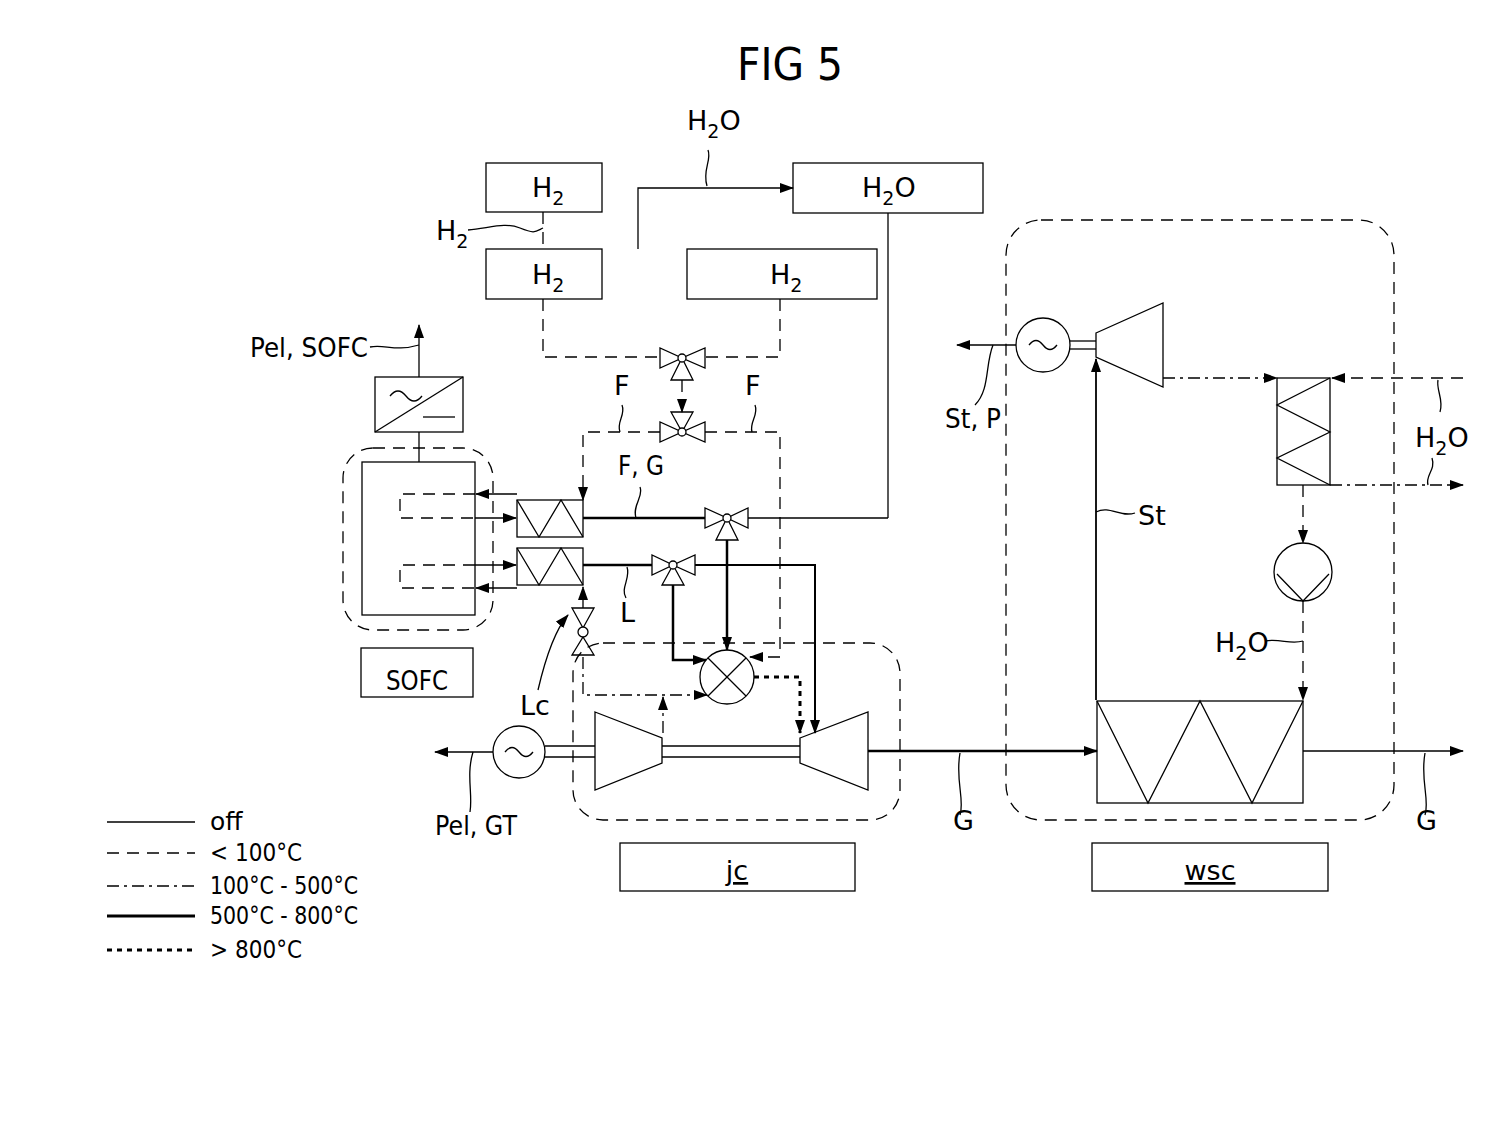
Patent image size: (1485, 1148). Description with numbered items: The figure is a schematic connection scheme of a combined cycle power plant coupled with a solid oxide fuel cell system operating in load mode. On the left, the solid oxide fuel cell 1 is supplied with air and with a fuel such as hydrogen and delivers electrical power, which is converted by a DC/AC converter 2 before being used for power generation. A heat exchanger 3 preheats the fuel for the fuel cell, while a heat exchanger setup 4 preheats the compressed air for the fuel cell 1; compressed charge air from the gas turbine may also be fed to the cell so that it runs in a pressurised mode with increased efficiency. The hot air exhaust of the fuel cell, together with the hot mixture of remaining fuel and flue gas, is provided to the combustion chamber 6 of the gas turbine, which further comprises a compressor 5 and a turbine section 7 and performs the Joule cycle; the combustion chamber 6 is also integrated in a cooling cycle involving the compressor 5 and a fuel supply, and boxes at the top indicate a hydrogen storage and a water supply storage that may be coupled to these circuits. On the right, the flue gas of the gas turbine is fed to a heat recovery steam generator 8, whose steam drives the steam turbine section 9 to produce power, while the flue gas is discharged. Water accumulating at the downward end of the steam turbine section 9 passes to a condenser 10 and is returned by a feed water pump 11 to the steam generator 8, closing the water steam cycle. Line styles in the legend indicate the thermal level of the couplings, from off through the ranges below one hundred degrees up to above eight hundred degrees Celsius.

The solid oxide fuel cell 1 is at (343, 538).
The DC/AC converter 2 is at (375, 400).
The heat exchanger 3 is at (538, 500).
The heat exchanger setup 4 is at (537, 585).
The compressor 5 is at (632, 777).
The combustion chamber 6 is at (727, 704).
The turbine section 7 is at (868, 720).
The steam generator 8 is at (1145, 701).
The steam turbine section 9 is at (1148, 315).
The condenser 10 is at (1277, 437).
The feed water pump 11 is at (1277, 565).